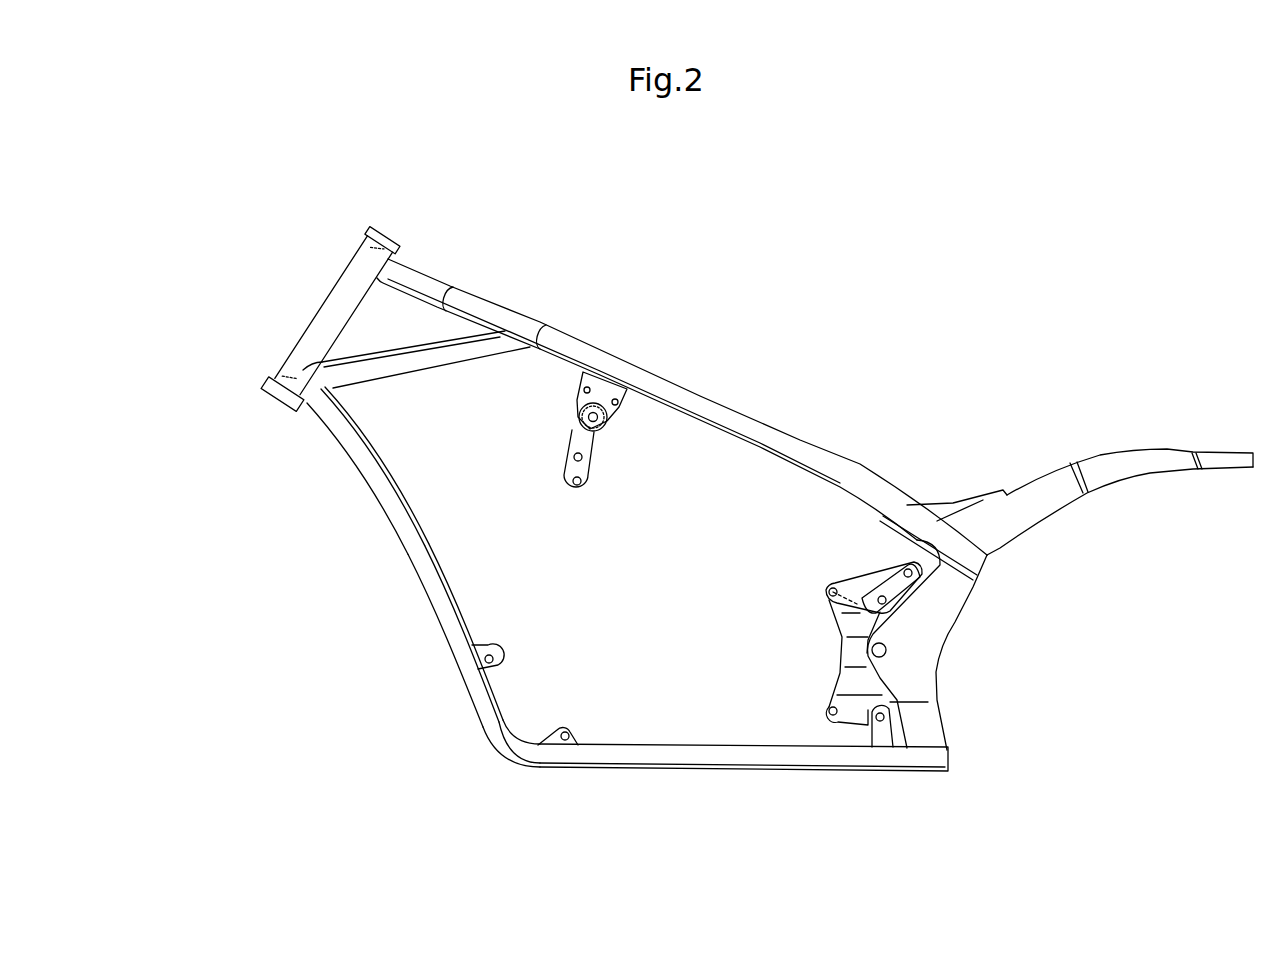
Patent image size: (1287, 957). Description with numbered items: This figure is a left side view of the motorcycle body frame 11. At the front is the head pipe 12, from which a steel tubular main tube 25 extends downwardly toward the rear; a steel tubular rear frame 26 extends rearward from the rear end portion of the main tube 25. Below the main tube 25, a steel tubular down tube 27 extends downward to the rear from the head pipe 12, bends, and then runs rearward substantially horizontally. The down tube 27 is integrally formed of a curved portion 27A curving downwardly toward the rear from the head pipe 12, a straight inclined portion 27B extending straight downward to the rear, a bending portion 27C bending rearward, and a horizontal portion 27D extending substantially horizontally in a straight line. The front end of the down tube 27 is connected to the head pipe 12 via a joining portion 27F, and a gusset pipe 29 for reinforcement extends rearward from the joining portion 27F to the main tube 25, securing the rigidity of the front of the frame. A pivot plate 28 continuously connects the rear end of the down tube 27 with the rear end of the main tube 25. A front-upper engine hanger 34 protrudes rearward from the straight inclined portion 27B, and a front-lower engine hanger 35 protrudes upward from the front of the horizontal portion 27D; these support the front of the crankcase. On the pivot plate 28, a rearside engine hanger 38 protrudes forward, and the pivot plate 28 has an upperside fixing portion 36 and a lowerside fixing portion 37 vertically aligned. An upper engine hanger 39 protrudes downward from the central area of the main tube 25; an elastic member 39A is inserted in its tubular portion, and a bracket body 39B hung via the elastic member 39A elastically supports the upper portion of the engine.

The body frame 11 is at (893, 325).
The head pipe 12 is at (336, 297).
The main tube 25 is at (727, 414).
The rear frame 26 is at (1148, 452).
The down tube 27 is at (404, 546).
The curved portion 27A is at (350, 455).
The straight inclined portion 27B is at (460, 674).
The bending portion 27C is at (493, 751).
The horizontal portion 27D is at (786, 768).
The joining portion 27F is at (287, 395).
The pivot plate 28 is at (935, 633).
The gusset pipe 29 is at (434, 364).
The front-upper engine hanger 34 is at (505, 657).
The front-lower engine hanger 35 is at (575, 726).
The upperside fixing portion 36 is at (832, 582).
The lowerside fixing portion 37 is at (825, 717).
The rearside engine hanger 38 is at (838, 626).
The upper engine hanger 39 is at (622, 405).
The elastic member 39A is at (580, 414).
The bracket body 39B is at (591, 473).